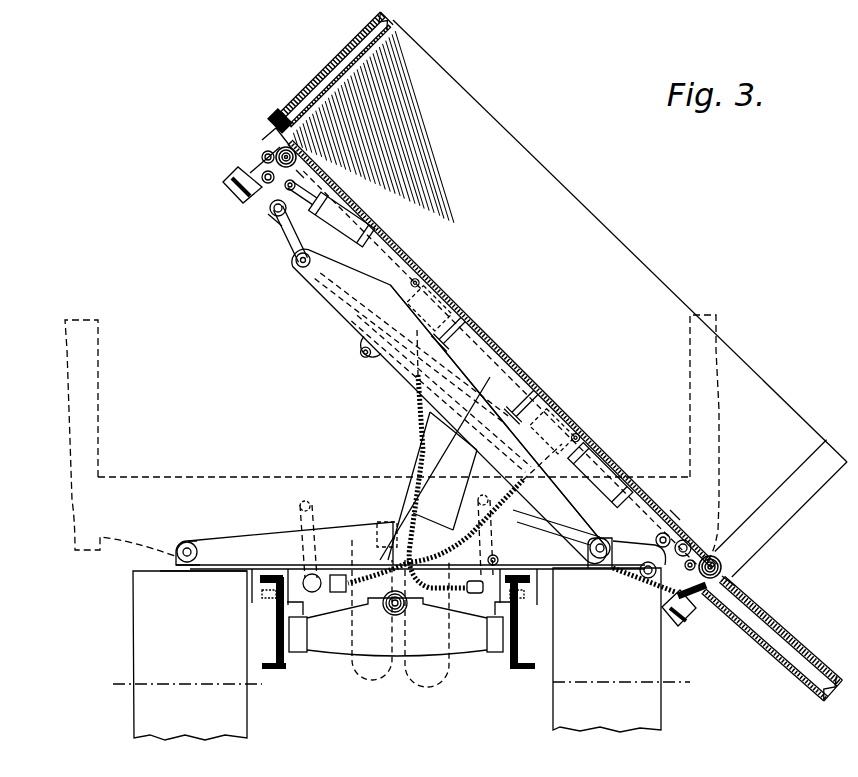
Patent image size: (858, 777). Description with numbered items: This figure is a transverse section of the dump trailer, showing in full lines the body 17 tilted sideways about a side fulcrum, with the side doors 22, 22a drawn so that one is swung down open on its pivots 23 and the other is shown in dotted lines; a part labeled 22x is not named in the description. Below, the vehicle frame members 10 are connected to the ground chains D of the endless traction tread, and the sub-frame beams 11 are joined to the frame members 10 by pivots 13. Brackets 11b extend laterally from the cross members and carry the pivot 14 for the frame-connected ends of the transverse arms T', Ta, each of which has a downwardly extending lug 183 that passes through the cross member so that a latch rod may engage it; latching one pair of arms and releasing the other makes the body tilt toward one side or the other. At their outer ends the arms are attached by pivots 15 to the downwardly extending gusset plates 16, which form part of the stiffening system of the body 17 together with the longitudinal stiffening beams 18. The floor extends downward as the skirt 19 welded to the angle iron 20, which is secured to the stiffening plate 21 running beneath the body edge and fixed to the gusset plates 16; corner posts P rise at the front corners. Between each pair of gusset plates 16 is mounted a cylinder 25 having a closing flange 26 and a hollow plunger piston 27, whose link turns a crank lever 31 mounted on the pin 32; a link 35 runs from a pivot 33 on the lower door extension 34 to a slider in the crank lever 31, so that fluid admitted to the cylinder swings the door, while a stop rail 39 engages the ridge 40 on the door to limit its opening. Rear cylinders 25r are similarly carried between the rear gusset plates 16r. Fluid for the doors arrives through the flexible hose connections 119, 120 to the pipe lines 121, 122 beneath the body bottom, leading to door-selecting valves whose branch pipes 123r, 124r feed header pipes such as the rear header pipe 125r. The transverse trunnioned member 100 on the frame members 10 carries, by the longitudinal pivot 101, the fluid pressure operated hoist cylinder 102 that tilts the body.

The body side top edge 22x is at (578, 222).
The corner post P is at (807, 492).
The side door 22 is at (788, 645).
The side door 22a is at (322, 82).
The body 17 is at (503, 347).
The pivot 23 is at (297, 156).
The link 35 is at (266, 155).
The stop rail 39 is at (262, 160).
The pivot 33 is at (267, 143).
The ridge 40 is at (266, 128).
The skirt 19 is at (229, 178).
The angle iron 20 is at (246, 184).
The stiffening plate 21 is at (271, 209).
The pin 32 is at (273, 215).
The crank lever 31 is at (297, 161).
The plunger piston 27 is at (304, 173).
The closing flange 26 is at (685, 502).
The lower door extension 34 is at (735, 580).
The cylinder 25 is at (320, 226).
The rear cylinder 25r is at (393, 250).
The rear header pipe 125r is at (392, 362).
The branch pipe 123r is at (419, 279).
The branch pipe 124r is at (578, 436).
The pipe line 121 is at (437, 301).
The pipe line 122 is at (563, 407).
The stiffening beam 18 is at (465, 323).
The transverse arm Ta is at (338, 308).
The rear gusset plate 16r is at (317, 293).
The pivot 15 is at (300, 267).
The gusset plate 16 is at (291, 242).
The lug 183 is at (357, 355).
The pivot 14 is at (187, 546).
The transverse arm T' is at (290, 529).
The bracket 11b is at (193, 570).
The sub-frame beam 11 is at (272, 572).
The pivot 13 is at (269, 597).
The frame member 10 is at (277, 668).
The ground chain D is at (147, 601).
The transverse trunnioned member 100 is at (472, 643).
The longitudinal pivot 101 is at (395, 605).
The hoist cylinder 102 is at (403, 468).
The flexible hose connection 119 is at (417, 490).
The flexible hose connection 120 is at (353, 577).